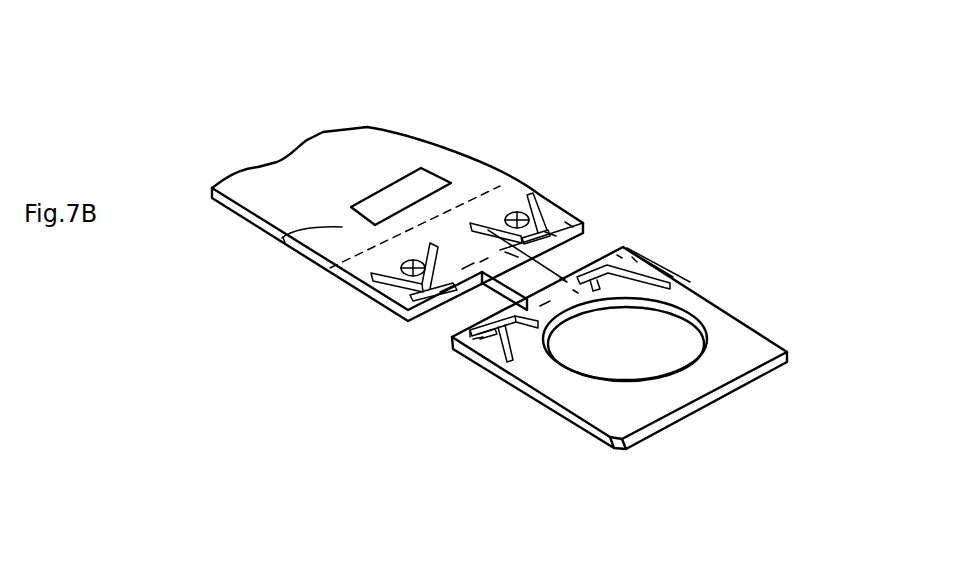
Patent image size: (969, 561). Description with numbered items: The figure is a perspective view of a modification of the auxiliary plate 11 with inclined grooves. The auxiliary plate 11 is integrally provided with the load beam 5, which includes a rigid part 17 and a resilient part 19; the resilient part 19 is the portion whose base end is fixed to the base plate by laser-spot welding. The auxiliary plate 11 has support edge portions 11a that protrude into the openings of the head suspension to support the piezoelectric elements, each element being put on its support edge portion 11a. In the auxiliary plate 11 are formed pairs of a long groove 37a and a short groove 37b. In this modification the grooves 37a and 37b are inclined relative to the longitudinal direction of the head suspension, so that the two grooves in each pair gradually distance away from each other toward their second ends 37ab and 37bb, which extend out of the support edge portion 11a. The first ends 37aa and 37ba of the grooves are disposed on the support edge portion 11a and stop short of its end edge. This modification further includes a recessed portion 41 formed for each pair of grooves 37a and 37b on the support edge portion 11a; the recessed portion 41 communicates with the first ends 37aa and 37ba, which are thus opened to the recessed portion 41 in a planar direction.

The load beam 5 is at (346, 128).
The auxiliary plate 11 is at (745, 344).
The support edge portion 11a is at (580, 228).
The rigid part 17 is at (257, 180).
The resilient part 19 is at (443, 163).
The long groove 37a is at (540, 228).
The first end of long groove 37aa is at (455, 318).
The second end of long groove 37ab is at (422, 288).
The short groove 37b is at (622, 293).
The first end of short groove 37ba is at (510, 363).
The second end of short groove 37bb is at (538, 324).
The recessed portion 41 is at (543, 228).